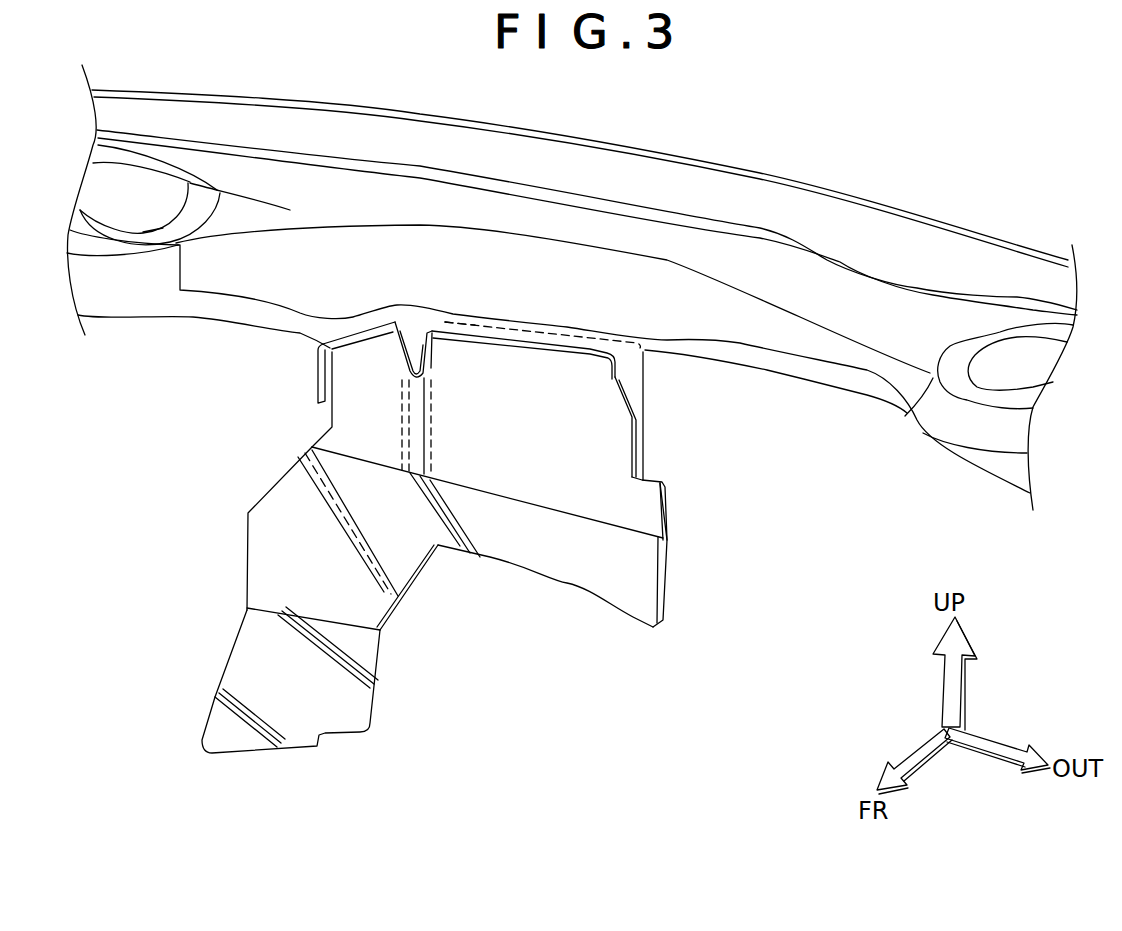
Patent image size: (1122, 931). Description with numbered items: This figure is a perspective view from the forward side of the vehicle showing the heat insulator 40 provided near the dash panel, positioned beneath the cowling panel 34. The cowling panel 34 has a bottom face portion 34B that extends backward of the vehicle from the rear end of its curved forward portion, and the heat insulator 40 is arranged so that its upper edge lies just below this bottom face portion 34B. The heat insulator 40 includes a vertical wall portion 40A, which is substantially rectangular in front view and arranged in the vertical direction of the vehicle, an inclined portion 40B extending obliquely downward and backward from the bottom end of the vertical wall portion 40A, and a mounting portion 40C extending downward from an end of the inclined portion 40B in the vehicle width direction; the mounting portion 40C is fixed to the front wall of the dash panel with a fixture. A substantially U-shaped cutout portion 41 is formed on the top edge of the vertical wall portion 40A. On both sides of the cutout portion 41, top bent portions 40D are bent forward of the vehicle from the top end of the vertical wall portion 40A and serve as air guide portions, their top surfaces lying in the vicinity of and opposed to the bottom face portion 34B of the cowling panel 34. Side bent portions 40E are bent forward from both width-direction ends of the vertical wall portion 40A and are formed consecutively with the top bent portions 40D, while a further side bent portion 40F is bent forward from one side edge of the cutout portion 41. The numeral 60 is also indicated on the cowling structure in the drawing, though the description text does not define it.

The cowling panel 34 is at (560, 278).
The bottom face portion 34B is at (670, 343).
The heat insulator 40 is at (434, 505).
The vertical wall portion 40A is at (537, 475).
The inclined portion 40B is at (403, 552).
The mounting portion 40C is at (343, 707).
The top bent portion 40D is at (362, 335).
The side bent portion 40E is at (320, 378).
The side bent portion 40F is at (438, 336).
The cutout portion 41 is at (410, 350).
The reinforcement member 60 is at (486, 292).